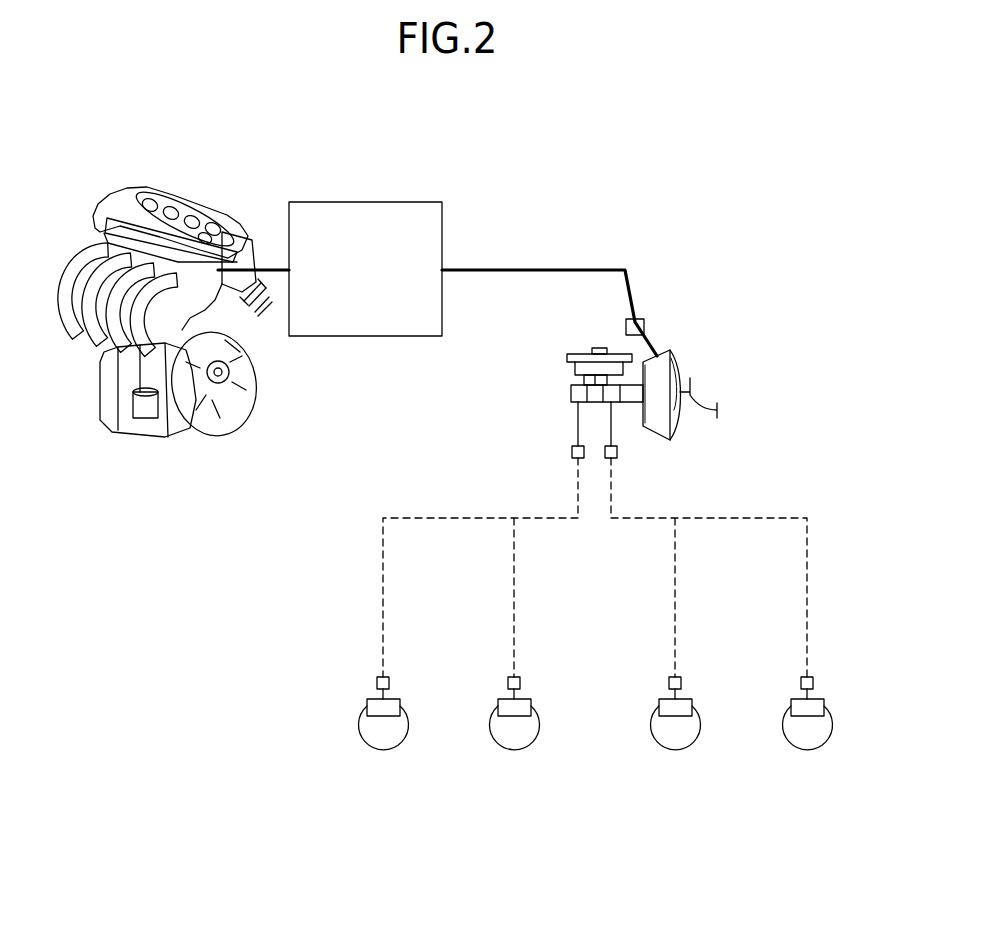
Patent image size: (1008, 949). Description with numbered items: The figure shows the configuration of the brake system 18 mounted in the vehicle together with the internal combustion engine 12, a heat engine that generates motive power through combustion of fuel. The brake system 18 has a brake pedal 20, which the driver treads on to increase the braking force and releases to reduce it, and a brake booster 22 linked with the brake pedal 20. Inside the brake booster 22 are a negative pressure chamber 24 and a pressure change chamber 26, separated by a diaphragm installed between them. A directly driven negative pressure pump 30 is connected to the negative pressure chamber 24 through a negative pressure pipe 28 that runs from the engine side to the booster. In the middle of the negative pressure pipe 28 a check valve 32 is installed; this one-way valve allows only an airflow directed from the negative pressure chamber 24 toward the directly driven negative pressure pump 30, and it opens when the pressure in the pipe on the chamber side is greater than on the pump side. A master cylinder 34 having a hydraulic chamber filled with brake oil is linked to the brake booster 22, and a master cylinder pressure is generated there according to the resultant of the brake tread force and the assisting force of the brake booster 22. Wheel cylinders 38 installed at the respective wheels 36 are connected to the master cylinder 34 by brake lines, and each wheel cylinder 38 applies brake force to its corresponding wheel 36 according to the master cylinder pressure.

The internal combustion engine 12 is at (98, 367).
The brake system 18 is at (807, 420).
The brake pedal 20 is at (696, 397).
The brake booster 22 is at (672, 432).
The negative pressure chamber 24 is at (652, 418).
The pressure change chamber 26 is at (674, 366).
The negative pressure pipe 28 is at (525, 268).
The directly driven negative pressure pump 30 is at (362, 202).
The check valve 32 is at (645, 322).
The master cylinder 34 is at (571, 392).
The wheel 36 is at (384, 750).
The wheel cylinder 38 is at (377, 682).